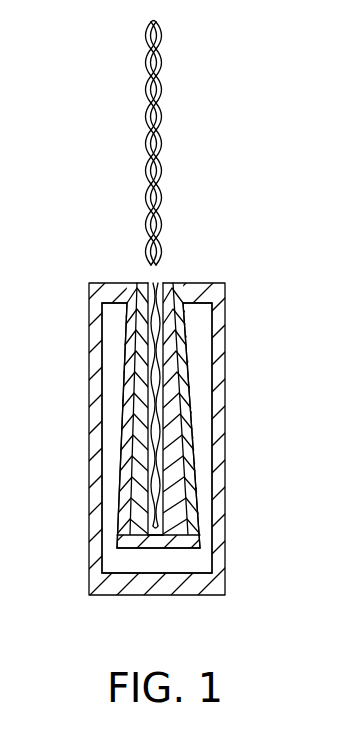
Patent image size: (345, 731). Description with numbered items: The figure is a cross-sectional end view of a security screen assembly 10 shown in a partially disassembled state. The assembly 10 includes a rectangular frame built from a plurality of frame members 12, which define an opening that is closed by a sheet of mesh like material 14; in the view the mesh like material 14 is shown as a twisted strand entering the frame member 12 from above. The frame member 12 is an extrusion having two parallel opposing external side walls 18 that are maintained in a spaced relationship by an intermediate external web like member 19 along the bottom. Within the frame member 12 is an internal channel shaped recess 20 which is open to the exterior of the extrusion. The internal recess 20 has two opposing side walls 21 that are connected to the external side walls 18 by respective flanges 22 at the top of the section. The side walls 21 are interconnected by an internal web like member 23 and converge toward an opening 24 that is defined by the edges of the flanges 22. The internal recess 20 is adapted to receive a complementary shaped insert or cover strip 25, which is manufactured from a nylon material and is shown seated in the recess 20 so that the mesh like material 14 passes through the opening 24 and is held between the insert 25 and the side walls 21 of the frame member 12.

The security screen assembly 10 is at (102, 207).
The frame member 12 is at (225, 565).
The sheet of mesh like material 14 is at (155, 67).
The external side wall 18 is at (92, 482).
The intermediate external web like member 19 is at (127, 595).
The internal channel shaped recess 20 is at (138, 518).
The internal side wall 21 is at (130, 392).
The flange 22 is at (114, 284).
The internal web like member 23 is at (185, 548).
The opening 24 is at (160, 282).
The insert or cover strip 25 is at (160, 517).